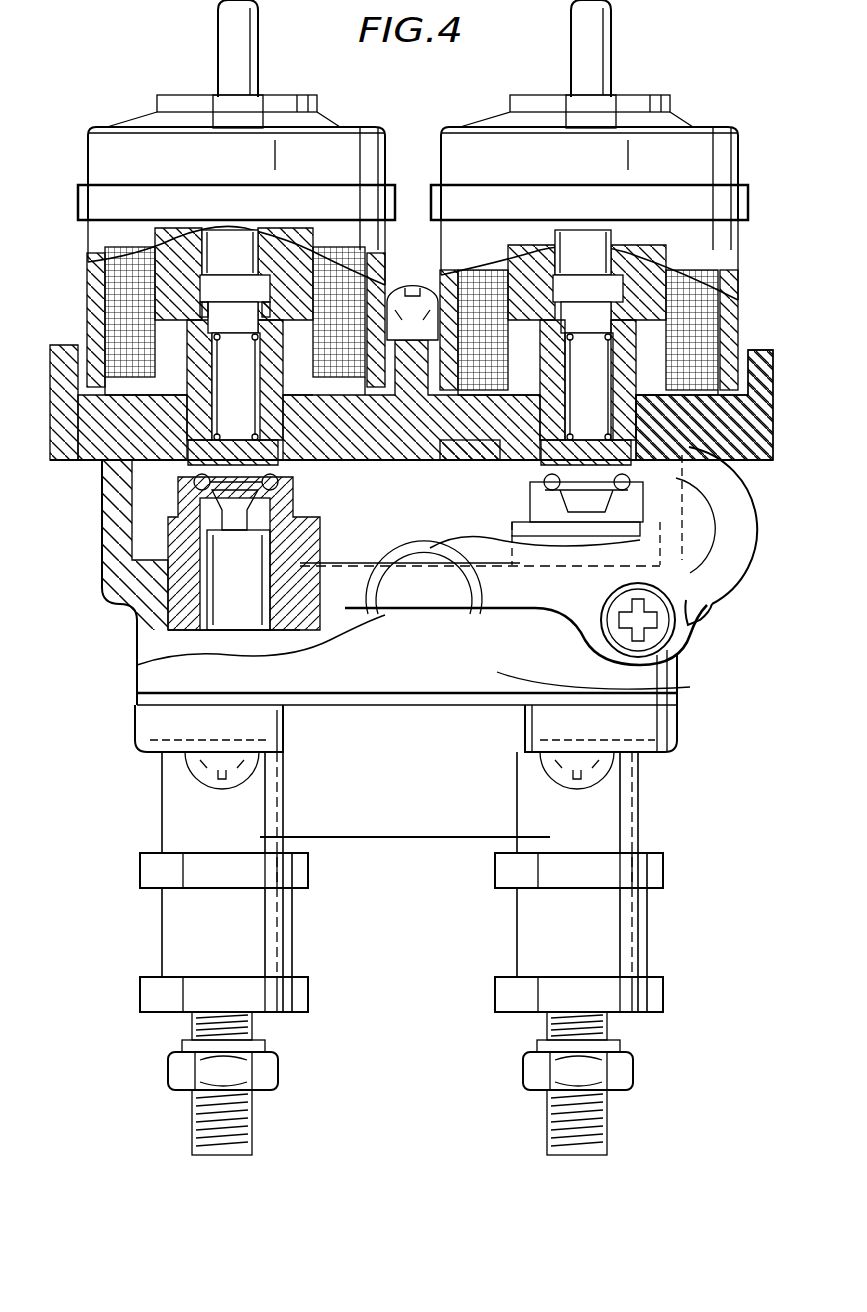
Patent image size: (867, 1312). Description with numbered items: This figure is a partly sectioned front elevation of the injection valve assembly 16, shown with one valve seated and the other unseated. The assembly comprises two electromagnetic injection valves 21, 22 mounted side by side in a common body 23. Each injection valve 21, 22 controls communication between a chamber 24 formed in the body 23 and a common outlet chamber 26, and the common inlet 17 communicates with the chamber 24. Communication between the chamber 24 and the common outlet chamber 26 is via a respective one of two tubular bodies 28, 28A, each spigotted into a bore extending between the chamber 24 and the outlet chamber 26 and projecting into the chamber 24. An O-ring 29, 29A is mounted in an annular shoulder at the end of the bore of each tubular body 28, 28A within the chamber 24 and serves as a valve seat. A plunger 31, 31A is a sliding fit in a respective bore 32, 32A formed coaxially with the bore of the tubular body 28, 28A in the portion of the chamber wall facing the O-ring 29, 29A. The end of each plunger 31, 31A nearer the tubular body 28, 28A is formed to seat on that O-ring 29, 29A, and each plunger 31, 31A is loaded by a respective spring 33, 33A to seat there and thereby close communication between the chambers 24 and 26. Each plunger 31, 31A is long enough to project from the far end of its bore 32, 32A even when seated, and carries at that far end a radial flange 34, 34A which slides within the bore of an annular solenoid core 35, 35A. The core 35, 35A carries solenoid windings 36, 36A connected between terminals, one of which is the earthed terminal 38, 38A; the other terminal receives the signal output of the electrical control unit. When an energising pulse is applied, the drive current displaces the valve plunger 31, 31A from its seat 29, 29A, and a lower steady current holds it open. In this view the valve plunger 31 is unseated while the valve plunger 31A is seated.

The injection valve assembly 16 is at (688, 754).
The common inlet 17 is at (418, 608).
The injection valve 21 is at (125, 158).
The injection valve 22 is at (575, 197).
The common body 23 is at (690, 687).
The chamber 24 is at (145, 520).
The common outlet chamber 26 is at (185, 645).
The tubular body 28 is at (280, 548).
The tubular body 28A is at (625, 512).
The O-ring 29 is at (270, 500).
The O-ring 29A is at (535, 505).
The plunger 31 is at (192, 455).
The plunger 31A is at (532, 456).
The bore 32 is at (108, 452).
The bore 32A is at (597, 515).
The spring 33 is at (295, 450).
The spring 33A is at (472, 455).
The radial flange 34 is at (175, 328).
The radial flange 34A is at (623, 388).
The annular solenoid core 35 is at (160, 258).
The annular solenoid core 35A is at (589, 333).
The solenoid windings 36 is at (130, 285).
The solenoid windings 36A is at (622, 316).
The terminal 38 is at (233, 49).
The terminal 38A is at (617, 48).